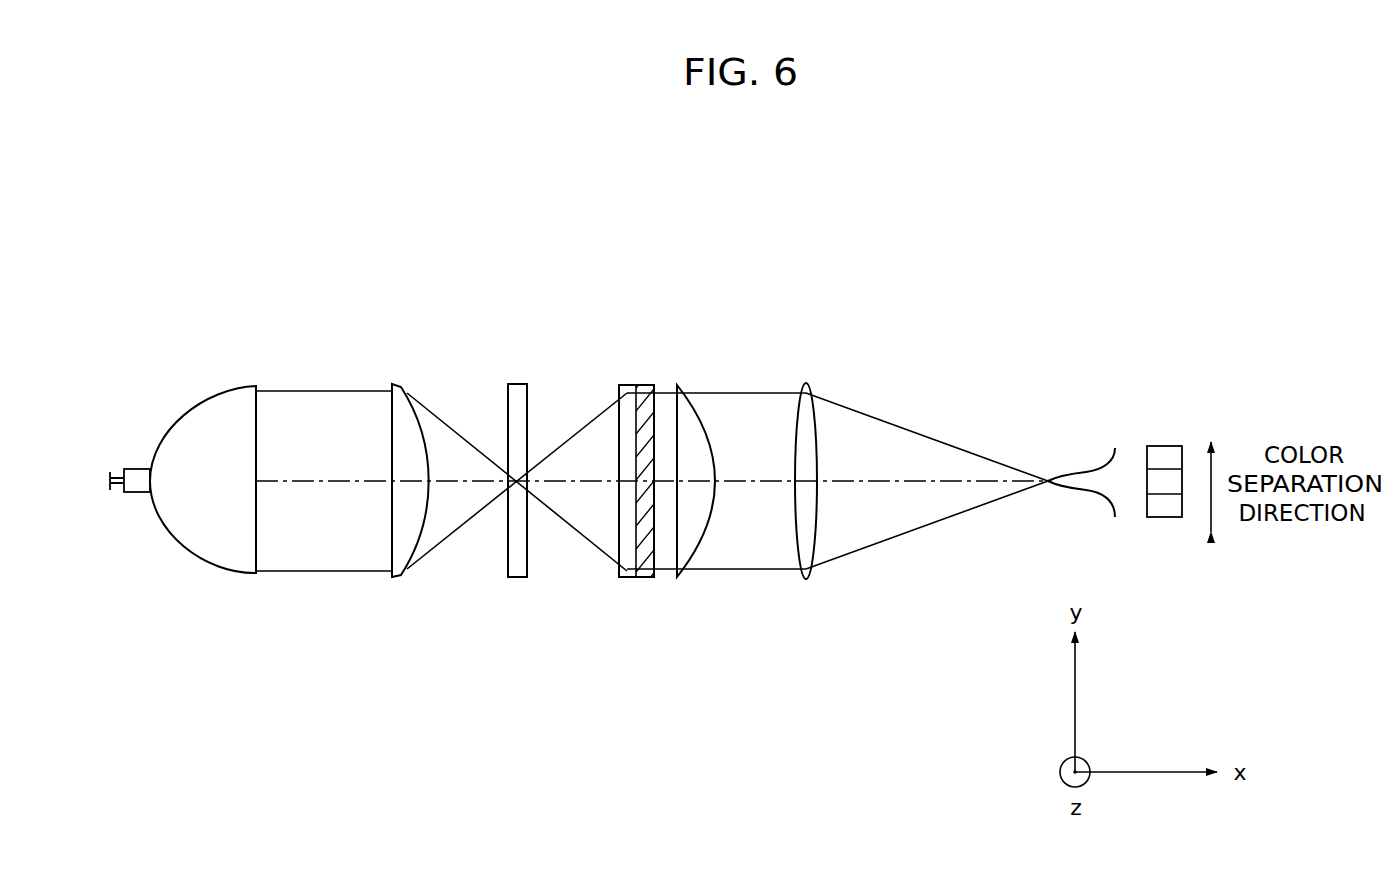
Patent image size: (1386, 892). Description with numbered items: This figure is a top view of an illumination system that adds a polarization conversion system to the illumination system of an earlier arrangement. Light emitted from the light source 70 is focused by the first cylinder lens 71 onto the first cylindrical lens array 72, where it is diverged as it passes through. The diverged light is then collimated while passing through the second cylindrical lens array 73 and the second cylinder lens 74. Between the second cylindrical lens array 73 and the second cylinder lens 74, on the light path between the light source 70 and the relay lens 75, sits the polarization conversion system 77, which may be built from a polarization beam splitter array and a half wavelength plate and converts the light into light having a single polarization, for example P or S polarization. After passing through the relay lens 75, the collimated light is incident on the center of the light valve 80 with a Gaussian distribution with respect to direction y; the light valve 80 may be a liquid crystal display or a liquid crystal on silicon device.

The light source 70 is at (241, 395).
The first cylinder lens 71 is at (393, 384).
The first cylindrical lens array 72 is at (518, 384).
The second cylindrical lens array 73 is at (628, 384).
The second cylinder lens 74 is at (680, 384).
The relay lens 75 is at (806, 383).
The polarization conversion system 77 is at (643, 578).
The light valve 80 is at (1163, 446).